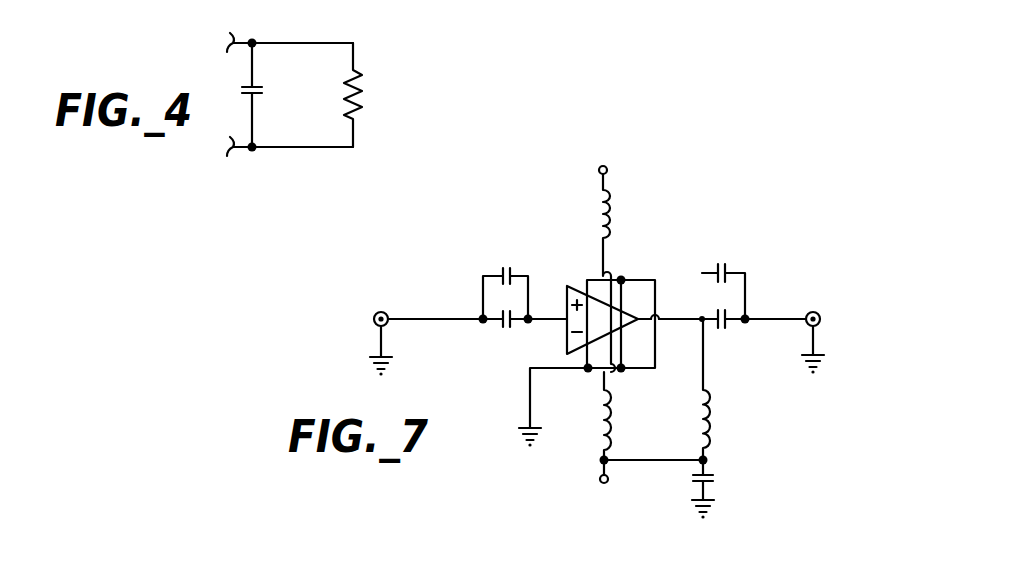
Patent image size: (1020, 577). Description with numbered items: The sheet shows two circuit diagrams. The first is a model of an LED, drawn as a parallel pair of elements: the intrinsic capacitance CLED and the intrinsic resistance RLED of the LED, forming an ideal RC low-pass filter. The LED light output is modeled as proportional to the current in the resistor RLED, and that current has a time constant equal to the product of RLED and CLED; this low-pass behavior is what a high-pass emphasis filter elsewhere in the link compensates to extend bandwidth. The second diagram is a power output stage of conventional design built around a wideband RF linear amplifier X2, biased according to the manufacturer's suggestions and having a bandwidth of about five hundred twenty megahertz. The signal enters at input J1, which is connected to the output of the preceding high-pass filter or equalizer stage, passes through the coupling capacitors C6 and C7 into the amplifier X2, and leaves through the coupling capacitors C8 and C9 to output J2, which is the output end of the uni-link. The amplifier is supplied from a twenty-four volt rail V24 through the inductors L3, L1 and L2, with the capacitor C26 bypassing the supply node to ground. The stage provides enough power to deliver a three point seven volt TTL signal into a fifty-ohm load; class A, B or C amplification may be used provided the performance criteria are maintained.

In FIG. 4, the intrinsic capacitance of the LED CLED is at (256, 84).
In FIG. 4, the intrinsic resistance of the LED RLED is at (358, 82).
In FIG. 7, the input J1 is at (383, 311).
In FIG. 7, the output J2 is at (813, 310).
In FIG. 7, the capacitor C6 is at (502, 270).
In FIG. 7, the capacitor C7 is at (513, 327).
In FIG. 7, the capacitor C8 is at (733, 270).
In FIG. 7, the capacitor C9 is at (728, 323).
In FIG. 7, the capacitor C26 is at (708, 473).
In FIG. 7, the inductor L1 is at (620, 430).
In FIG. 7, the inductor L2 is at (720, 427).
In FIG. 7, the inductor L3 is at (618, 210).
In FIG. 7, the wideband RF linear amplifier X2 is at (577, 286).
In FIG. 7, the 24 V supply terminal V24 is at (602, 325).